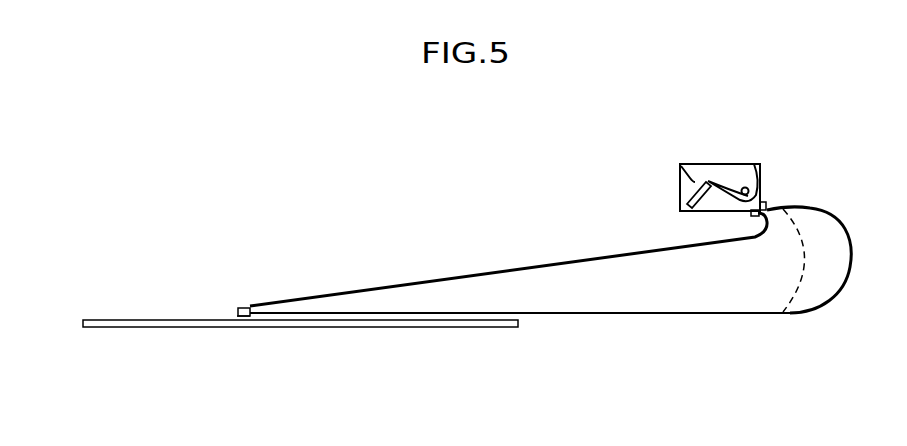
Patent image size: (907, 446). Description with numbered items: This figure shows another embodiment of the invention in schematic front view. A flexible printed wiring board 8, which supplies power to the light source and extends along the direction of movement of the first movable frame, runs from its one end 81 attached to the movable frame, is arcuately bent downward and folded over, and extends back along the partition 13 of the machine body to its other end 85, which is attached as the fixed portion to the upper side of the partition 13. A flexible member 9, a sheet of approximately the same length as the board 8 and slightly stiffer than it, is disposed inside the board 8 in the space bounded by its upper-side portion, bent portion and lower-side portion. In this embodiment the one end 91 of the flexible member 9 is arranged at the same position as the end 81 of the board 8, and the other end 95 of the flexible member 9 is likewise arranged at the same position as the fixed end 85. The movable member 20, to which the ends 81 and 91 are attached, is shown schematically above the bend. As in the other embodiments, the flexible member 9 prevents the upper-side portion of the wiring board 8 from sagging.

The flexible printed wiring board 8 is at (835, 295).
The flexible member 9 is at (522, 268).
The partition 13 is at (147, 326).
The control device 20 is at (718, 158).
The one end of the wiring board 81 is at (767, 201).
The other end of the wiring board 85 is at (237, 311).
The one end of the flexible member 91 is at (750, 218).
The other end of the flexible member 95 is at (243, 307).